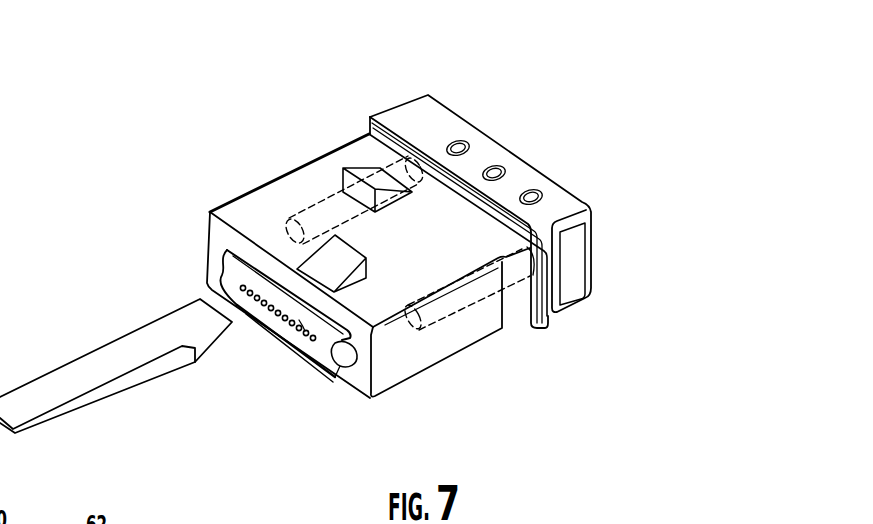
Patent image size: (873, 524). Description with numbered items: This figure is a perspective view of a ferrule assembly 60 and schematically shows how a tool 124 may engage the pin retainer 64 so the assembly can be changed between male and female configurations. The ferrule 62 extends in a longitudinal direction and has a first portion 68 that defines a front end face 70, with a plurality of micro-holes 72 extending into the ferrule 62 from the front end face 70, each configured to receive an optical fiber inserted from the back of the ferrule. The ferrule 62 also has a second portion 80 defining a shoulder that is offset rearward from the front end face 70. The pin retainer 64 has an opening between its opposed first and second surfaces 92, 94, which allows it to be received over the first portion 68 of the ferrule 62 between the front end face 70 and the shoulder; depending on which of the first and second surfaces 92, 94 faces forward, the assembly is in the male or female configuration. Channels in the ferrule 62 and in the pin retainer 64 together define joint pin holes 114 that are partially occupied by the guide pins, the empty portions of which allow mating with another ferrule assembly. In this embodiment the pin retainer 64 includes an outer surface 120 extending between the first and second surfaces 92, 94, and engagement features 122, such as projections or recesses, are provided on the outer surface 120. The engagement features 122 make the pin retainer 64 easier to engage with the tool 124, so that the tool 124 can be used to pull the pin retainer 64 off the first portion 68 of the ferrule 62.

The ferrule assembly 60 is at (231, 134).
The ferrule 62 is at (414, 101).
The pin retainer 64 is at (272, 179).
The first portion 68 is at (208, 258).
The front end face 70 is at (247, 300).
The micro-holes 72 is at (299, 326).
The second portion 80 is at (375, 114).
The first surface 92 is at (204, 265).
The second surface 94 is at (366, 156).
The joint pin holes 114 is at (380, 368).
The outer surface 120 is at (303, 184).
The engagement features 122 is at (373, 267).
The tool 124 is at (82, 362).